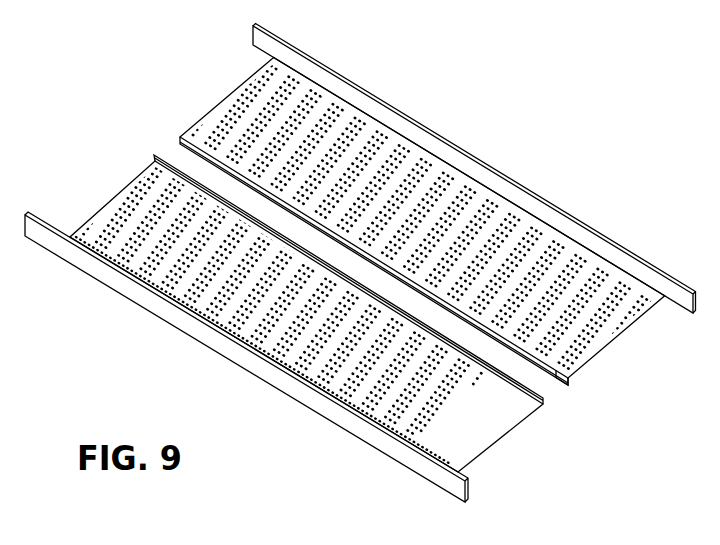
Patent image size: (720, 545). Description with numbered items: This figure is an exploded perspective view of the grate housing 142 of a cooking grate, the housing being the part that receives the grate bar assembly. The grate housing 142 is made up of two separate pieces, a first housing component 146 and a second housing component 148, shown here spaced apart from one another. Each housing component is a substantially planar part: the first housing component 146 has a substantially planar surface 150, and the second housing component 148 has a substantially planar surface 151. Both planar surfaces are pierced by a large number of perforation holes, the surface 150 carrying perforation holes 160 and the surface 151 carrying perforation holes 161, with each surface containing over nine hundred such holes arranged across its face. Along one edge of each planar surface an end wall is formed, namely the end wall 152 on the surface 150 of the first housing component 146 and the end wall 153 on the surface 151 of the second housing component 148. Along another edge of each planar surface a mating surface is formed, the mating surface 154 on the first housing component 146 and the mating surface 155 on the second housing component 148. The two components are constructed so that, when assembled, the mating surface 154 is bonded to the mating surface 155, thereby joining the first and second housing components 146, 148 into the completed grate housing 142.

The grate housing 142 is at (423, 83).
The first housing component 146 is at (257, 92).
The second housing component 148 is at (128, 197).
The substantially planar surface 150 is at (557, 252).
The substantially planar surface 151 is at (368, 403).
The end wall 152 is at (510, 190).
The end wall 153 is at (247, 358).
The mating surface 154 is at (572, 379).
The mating surface 155 is at (547, 400).
The perforation holes 160 is at (603, 342).
The perforation holes 161 is at (463, 456).